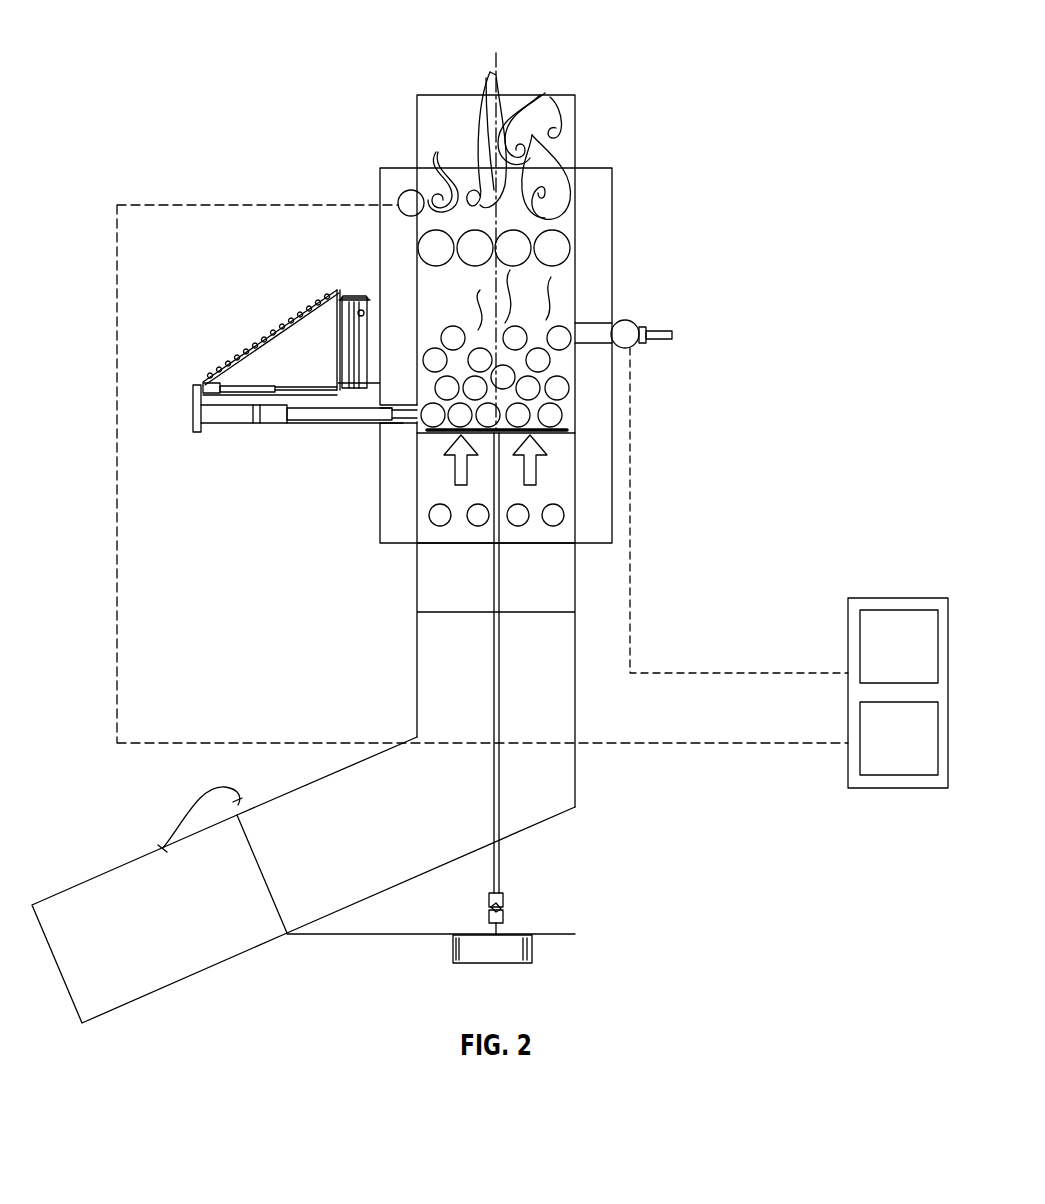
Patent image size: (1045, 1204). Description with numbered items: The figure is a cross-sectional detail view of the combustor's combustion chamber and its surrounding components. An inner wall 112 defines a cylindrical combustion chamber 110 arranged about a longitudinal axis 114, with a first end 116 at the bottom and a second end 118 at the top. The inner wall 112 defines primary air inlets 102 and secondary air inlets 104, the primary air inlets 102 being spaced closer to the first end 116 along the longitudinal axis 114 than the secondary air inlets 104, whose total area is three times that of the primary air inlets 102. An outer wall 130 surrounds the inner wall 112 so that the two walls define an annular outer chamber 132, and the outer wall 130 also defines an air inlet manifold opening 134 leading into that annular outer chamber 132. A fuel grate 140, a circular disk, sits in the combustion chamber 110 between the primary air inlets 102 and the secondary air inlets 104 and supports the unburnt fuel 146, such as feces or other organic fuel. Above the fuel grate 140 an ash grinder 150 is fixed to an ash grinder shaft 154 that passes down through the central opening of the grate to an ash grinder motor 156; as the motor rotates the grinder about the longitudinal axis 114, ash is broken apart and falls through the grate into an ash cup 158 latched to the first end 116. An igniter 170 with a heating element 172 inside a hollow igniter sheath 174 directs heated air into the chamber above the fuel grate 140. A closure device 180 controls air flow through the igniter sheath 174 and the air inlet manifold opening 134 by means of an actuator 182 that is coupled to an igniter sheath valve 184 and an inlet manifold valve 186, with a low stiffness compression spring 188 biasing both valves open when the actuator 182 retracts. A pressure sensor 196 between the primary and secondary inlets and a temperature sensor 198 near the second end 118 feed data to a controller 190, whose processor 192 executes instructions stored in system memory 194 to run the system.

The primary air inlets 102 is at (559, 527).
The secondary air inlets 104 is at (565, 243).
The combustion chamber 110 is at (430, 288).
The inner wall 112 is at (417, 305).
The longitudinal axis 114 is at (500, 66).
The first end 116 is at (342, 921).
The second end 118 is at (592, 114).
The outer wall 130 is at (615, 287).
The annular outer chamber 132 is at (602, 195).
The air inlet manifold opening 134 is at (349, 323).
The fuel grate 140 is at (578, 434).
The unburnt fuel 146 is at (568, 333).
The ash grinder 150 is at (572, 428).
The ash grinder shaft 154 is at (502, 722).
The ash grinder motor 156 is at (510, 953).
The ash cup 158 is at (185, 948).
The igniter 170 is at (258, 424).
The heating element 172 is at (352, 428).
The igniter sheath 174 is at (289, 428).
The closure device 180 is at (187, 340).
The actuator 182 is at (202, 387).
The igniter sheath valve 184 is at (190, 420).
The inlet manifold valve 186 is at (334, 372).
The spring 188 is at (265, 337).
The controller 190 is at (898, 675).
The processor 192 is at (899, 646).
The system memory 194 is at (899, 738).
The pressure sensor 196 is at (630, 348).
The temperature sensor 198 is at (401, 192).